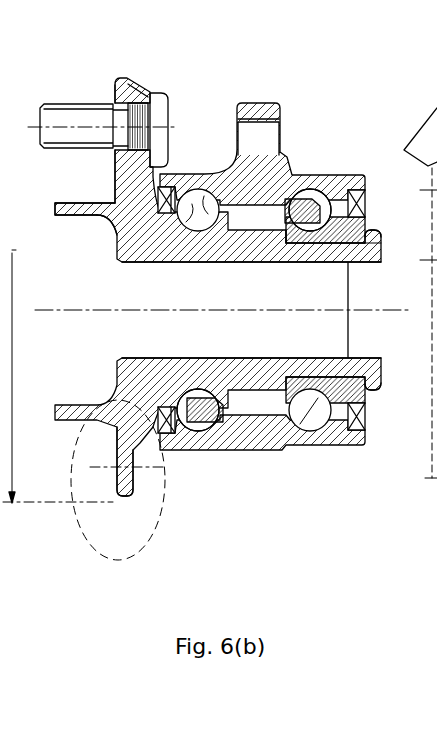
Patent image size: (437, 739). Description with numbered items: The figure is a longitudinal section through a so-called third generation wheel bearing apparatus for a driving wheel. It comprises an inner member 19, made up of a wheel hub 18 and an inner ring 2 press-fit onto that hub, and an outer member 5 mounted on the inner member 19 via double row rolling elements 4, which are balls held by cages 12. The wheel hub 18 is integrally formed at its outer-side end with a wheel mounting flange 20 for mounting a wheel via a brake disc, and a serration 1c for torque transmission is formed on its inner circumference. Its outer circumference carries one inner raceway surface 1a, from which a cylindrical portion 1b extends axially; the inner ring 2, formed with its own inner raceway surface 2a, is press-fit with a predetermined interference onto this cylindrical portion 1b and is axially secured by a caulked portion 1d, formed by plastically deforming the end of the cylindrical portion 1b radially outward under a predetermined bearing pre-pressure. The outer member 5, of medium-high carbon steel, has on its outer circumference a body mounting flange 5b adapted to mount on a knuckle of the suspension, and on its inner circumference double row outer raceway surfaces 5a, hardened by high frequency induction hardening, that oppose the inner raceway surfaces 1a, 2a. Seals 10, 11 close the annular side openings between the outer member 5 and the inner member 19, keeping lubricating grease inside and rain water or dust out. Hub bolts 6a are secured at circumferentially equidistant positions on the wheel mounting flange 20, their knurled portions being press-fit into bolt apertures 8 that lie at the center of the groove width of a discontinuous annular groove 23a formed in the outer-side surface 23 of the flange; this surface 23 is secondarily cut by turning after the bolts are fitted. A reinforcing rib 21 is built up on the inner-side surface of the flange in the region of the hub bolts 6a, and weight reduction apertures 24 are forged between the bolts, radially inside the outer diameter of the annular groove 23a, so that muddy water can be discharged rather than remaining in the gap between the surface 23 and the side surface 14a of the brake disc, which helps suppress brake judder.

The inner raceway surface 1a is at (195, 238).
The cylindrical portion 1b is at (341, 231).
The serration 1c is at (176, 266).
The caulked portion 1d is at (373, 383).
The inner ring 2 is at (357, 216).
The inner raceway surface 2a is at (312, 226).
The rolling elements 4 is at (300, 446).
The outer member 5 is at (228, 173).
The outer raceway surfaces 5a is at (200, 205).
The body mounting flange 5b is at (267, 108).
The hub bolts 6a is at (75, 110).
The bolt apertures 8 is at (147, 109).
The seal 10 is at (172, 435).
The seal 11 is at (357, 432).
The cages 12 is at (273, 377).
The side surface of brake disc 14a is at (401, 257).
The wheel hub 18 is at (128, 238).
The inner member 19 is at (110, 253).
The wheel mounting flange 20 is at (122, 78).
The reinforcing rib 21 is at (147, 80).
The outer-side surface 23 is at (112, 180).
The annular groove 23a is at (112, 155).
The weight reduction apertures 24 is at (124, 488).